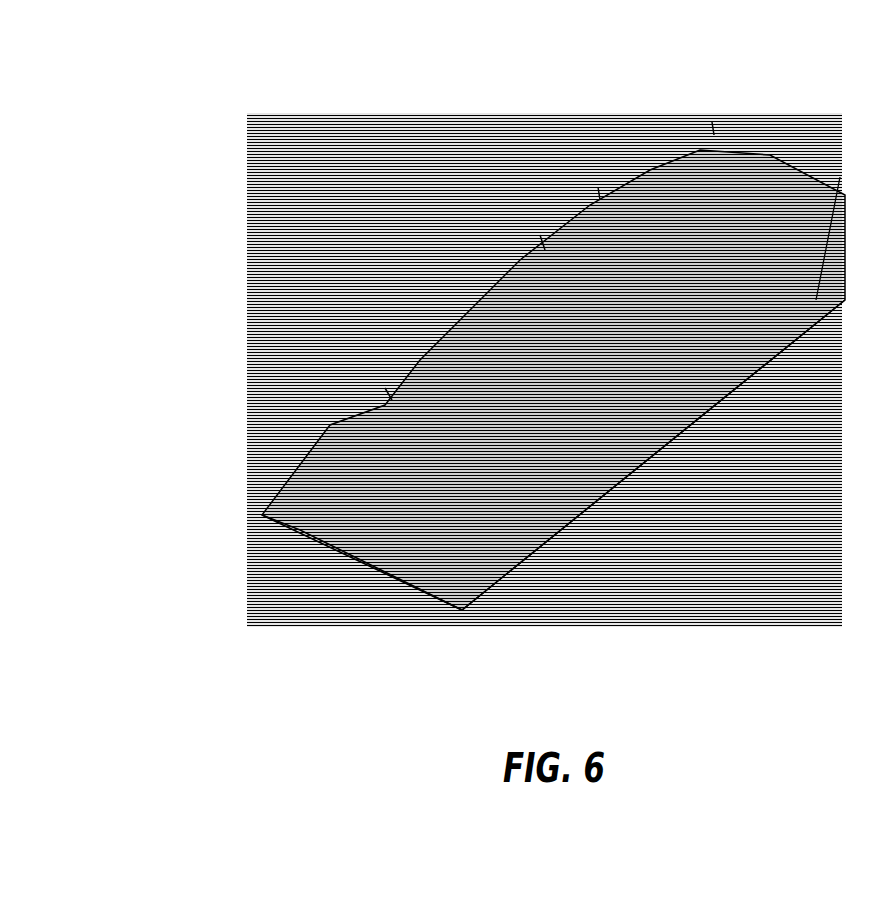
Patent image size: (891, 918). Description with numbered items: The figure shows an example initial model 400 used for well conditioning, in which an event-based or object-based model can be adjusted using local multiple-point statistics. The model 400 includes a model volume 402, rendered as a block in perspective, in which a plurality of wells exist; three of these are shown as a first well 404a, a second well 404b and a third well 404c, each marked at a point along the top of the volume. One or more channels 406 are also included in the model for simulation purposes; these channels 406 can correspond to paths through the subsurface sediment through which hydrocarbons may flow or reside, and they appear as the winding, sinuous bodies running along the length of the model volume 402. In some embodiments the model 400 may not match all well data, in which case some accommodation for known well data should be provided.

The model 400 is at (214, 666).
The model volume 402 is at (438, 288).
The well 404a is at (541, 238).
The well 404b is at (598, 187).
The well 404c is at (712, 122).
The channel 406 is at (385, 388).